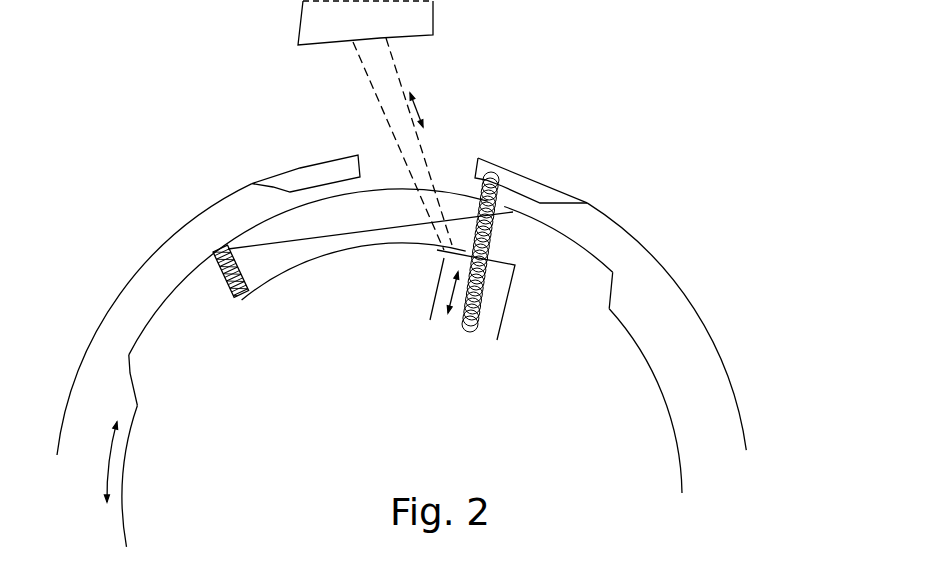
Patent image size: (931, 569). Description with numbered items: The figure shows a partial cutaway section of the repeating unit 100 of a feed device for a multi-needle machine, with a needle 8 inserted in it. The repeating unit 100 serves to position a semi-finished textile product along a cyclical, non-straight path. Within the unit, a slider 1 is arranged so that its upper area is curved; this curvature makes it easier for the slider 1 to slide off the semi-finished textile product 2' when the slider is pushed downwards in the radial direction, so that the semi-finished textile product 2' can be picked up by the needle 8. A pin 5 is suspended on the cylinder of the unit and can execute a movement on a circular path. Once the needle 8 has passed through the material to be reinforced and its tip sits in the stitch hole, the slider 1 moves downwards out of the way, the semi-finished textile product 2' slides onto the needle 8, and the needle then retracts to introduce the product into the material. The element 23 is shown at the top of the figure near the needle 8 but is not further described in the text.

The slider 1 is at (500, 235).
The semi-finished textile product 2' is at (370, 272).
The pin 5 is at (232, 300).
The needle 8 is at (420, 158).
The welding head 23 is at (433, 20).
The repeating unit 100 is at (736, 213).